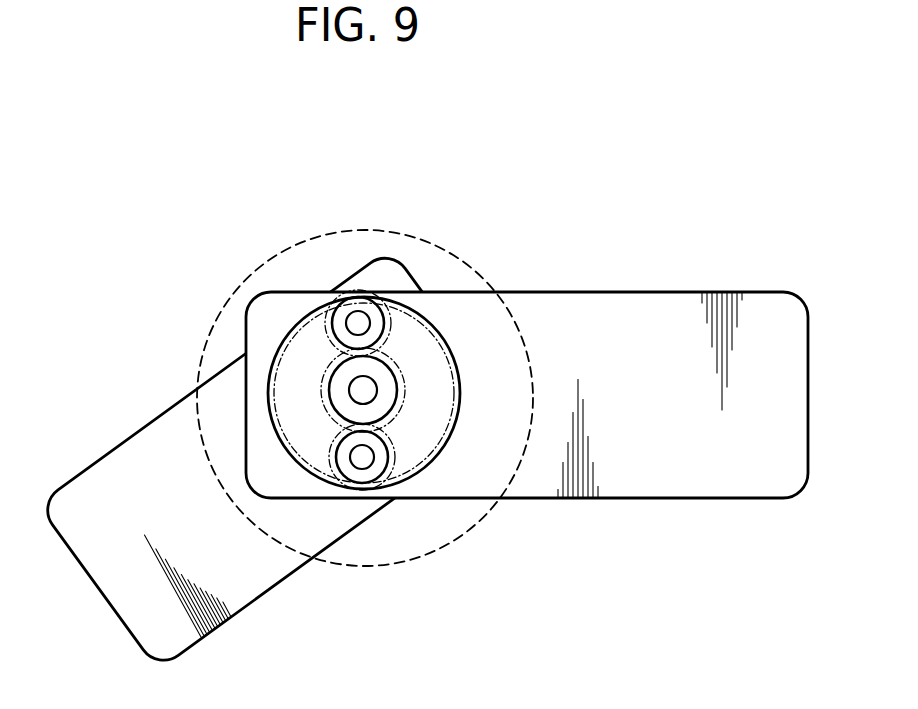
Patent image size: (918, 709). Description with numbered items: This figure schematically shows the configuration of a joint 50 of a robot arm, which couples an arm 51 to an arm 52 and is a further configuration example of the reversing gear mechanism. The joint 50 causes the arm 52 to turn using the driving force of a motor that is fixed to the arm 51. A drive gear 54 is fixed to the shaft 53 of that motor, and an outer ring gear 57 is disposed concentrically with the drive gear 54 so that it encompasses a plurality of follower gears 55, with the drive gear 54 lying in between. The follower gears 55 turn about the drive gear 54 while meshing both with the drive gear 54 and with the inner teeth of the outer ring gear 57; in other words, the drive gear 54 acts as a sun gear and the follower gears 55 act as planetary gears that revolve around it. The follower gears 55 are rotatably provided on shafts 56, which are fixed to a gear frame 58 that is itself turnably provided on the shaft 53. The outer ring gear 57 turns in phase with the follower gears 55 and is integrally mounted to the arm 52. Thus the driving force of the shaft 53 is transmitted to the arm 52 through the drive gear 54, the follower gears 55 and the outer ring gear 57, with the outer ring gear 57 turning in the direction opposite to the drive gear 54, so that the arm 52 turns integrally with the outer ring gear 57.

The joint 50 is at (531, 376).
The arm 51 is at (130, 438).
The arm 52 is at (520, 292).
The shaft 53 is at (374, 412).
The drive gear 54 is at (363, 390).
The follower gears 55 is at (367, 296).
The shafts 56 is at (358, 323).
The outer ring gear 57 is at (292, 328).
The gear frame 58 is at (313, 338).